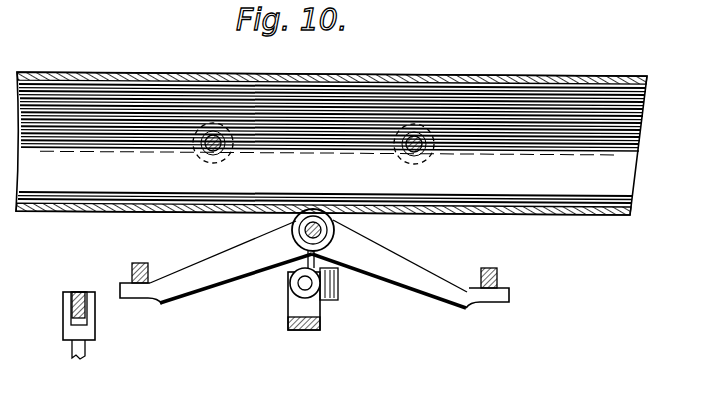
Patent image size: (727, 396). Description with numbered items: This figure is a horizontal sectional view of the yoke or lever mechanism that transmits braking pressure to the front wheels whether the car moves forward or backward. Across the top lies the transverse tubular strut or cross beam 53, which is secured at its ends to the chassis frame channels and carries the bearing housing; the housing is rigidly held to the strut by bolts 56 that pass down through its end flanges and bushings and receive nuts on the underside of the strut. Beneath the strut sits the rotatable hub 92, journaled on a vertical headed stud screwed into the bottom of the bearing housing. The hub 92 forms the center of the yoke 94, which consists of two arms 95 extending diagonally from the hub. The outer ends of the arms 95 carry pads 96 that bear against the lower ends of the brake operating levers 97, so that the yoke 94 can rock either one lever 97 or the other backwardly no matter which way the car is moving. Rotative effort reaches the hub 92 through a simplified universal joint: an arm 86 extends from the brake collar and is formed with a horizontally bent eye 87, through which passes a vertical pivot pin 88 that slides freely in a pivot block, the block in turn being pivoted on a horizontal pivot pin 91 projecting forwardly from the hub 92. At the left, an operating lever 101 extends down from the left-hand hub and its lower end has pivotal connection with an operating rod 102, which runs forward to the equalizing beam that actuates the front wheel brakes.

The tubular strut or cross beam 53 is at (398, 77).
The bolts 56 is at (204, 143).
The rotatable hub 92 is at (293, 228).
The yoke 94 is at (216, 258).
The arms 95 is at (399, 275).
The pads 96 is at (136, 294).
The brake operating levers 97 is at (138, 263).
The vertical pivot pin 88 is at (304, 284).
The horizontally bent eye 87 is at (291, 305).
The arm 86 is at (291, 333).
The horizontal pivot pin 91 is at (330, 301).
The operating lever 101 is at (77, 297).
The operating rod 102 is at (86, 352).